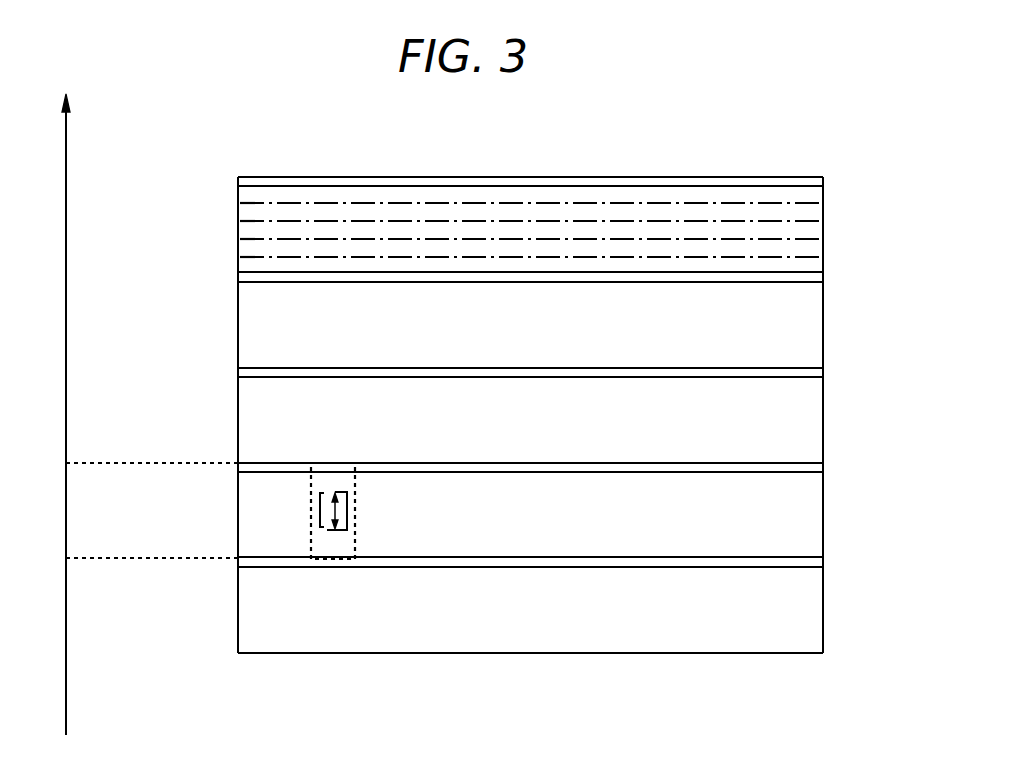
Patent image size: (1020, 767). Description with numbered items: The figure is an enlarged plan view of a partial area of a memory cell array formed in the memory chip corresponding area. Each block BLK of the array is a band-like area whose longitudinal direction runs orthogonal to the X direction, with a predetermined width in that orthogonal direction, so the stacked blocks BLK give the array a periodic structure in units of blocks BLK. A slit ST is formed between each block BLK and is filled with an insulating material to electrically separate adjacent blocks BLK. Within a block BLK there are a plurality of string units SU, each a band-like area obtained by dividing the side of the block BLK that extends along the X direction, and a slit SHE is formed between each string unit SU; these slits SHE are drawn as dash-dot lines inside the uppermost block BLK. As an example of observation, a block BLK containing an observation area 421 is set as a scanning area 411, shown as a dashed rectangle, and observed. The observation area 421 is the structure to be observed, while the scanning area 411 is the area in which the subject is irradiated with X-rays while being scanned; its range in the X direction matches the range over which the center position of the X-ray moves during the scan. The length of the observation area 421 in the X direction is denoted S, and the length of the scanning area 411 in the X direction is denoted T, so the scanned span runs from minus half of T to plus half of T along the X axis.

The X direction X is at (52, 412).
The slit ST is at (823, 178).
The slit SHE is at (797, 258).
The string unit SU is at (238, 193).
The block BLK is at (152, 188).
The length of the scanning area in the X direction T is at (90, 551).
The scanning area 411 is at (311, 546).
The observation area 421 is at (334, 492).
The length of the observation area in the X direction S is at (355, 512).